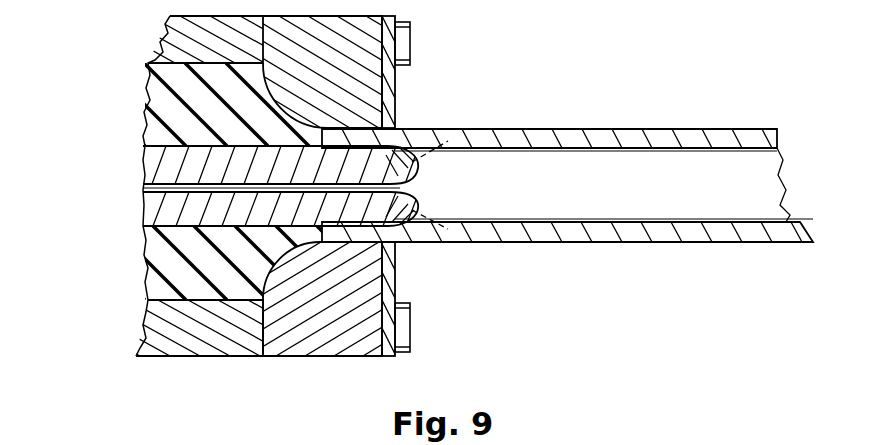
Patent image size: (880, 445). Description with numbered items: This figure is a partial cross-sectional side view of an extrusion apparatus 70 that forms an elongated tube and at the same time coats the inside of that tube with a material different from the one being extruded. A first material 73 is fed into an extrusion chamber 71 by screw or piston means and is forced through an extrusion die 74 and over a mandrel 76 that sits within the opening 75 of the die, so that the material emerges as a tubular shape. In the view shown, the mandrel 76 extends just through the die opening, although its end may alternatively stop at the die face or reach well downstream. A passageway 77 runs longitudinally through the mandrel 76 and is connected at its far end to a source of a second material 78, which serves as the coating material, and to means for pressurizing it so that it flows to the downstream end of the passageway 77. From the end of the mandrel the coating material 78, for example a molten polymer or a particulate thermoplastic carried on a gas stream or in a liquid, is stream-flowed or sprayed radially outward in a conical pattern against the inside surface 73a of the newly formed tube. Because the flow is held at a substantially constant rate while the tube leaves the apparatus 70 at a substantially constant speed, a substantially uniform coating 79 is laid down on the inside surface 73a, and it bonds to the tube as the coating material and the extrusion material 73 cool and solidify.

The extrusion apparatus 70 is at (93, 290).
The extrusion chamber 71 is at (142, 332).
The first material 73 is at (152, 91).
The inside surface 73a is at (613, 224).
The extrusion die 74 is at (328, 346).
The opening of the extrusion die 75 is at (383, 262).
The mandrel 76 is at (158, 215).
The passageway 77 is at (146, 188).
The second material 78 is at (503, 113).
The coating 79 is at (655, 150).